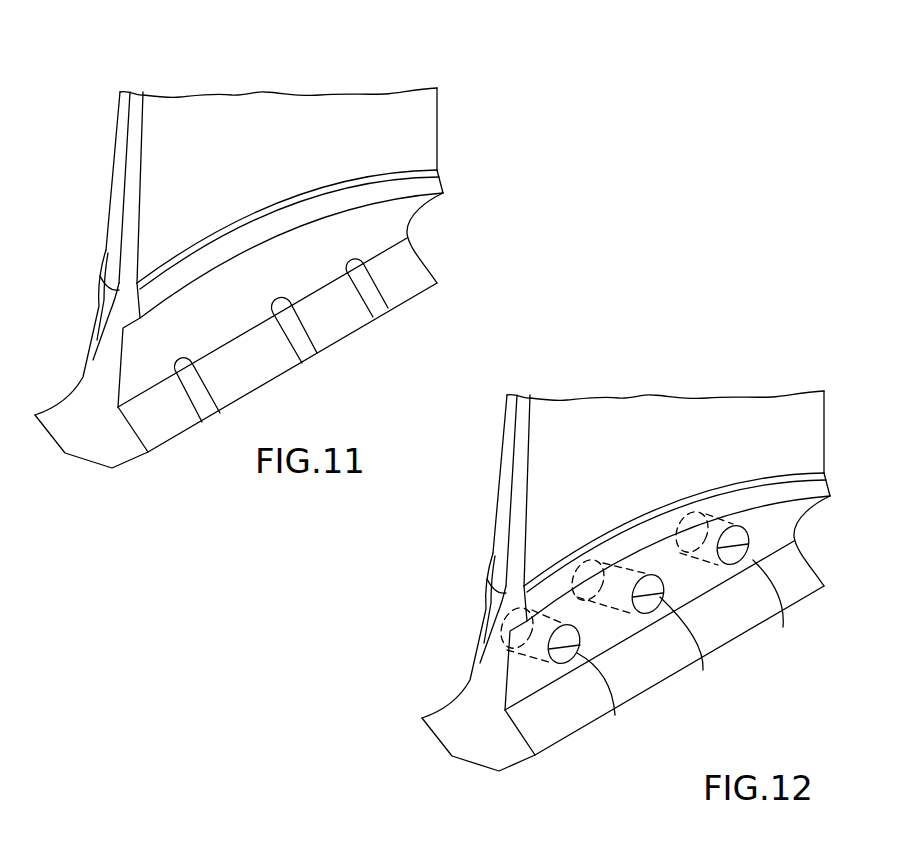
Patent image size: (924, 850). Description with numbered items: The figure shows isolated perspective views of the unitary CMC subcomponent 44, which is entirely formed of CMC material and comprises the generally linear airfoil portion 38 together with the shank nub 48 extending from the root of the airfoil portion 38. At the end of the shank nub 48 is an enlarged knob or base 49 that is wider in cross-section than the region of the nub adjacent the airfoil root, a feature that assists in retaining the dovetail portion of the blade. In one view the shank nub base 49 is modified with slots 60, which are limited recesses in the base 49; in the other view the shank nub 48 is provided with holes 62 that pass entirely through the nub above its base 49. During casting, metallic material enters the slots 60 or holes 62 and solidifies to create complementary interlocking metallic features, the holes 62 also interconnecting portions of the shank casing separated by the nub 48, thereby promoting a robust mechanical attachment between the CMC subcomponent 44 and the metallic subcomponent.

In FIG. 11, the airfoil portion 38 is at (232, 105).
In FIG. 12, the airfoil portion 38 is at (618, 402).
In FIG. 11, the CMC subcomponent 44 is at (372, 54).
In FIG. 12, the CMC subcomponent 44 is at (760, 352).
In FIG. 11, the shank nub 48 is at (138, 338).
In FIG. 12, the shank nub 48 is at (502, 608).
In FIG. 11, the shank nub base 49 is at (92, 451).
In FIG. 12, the shank nub base 49 is at (472, 748).
In FIG. 11, the slots 60 is at (187, 370).
In FIG. 12, the holes 62 is at (615, 715).